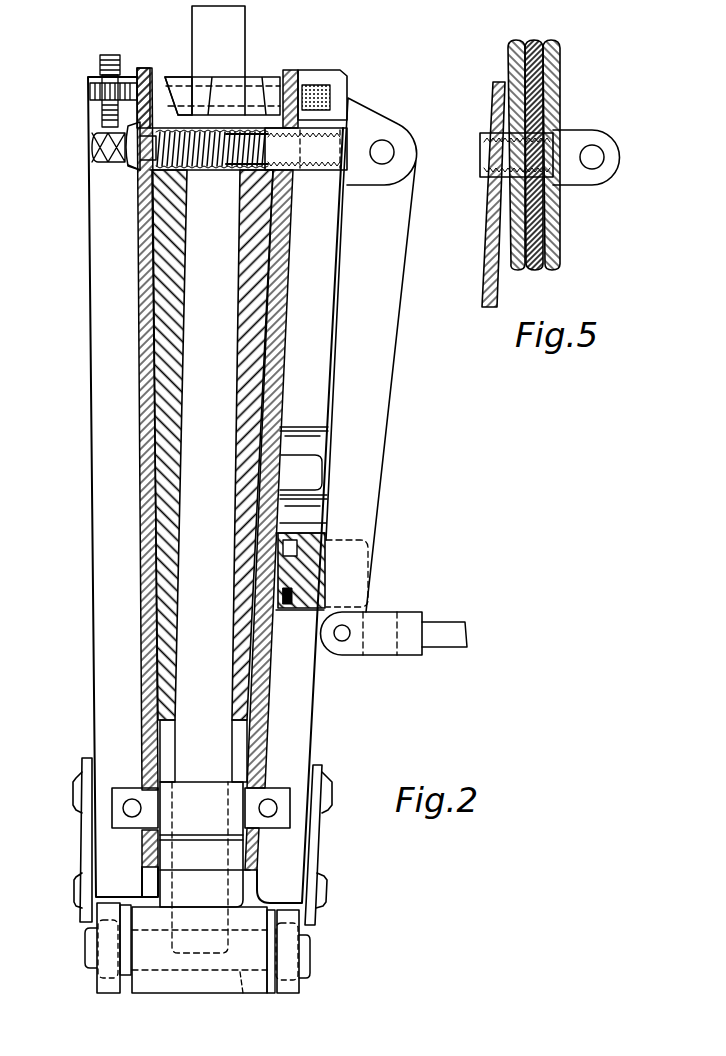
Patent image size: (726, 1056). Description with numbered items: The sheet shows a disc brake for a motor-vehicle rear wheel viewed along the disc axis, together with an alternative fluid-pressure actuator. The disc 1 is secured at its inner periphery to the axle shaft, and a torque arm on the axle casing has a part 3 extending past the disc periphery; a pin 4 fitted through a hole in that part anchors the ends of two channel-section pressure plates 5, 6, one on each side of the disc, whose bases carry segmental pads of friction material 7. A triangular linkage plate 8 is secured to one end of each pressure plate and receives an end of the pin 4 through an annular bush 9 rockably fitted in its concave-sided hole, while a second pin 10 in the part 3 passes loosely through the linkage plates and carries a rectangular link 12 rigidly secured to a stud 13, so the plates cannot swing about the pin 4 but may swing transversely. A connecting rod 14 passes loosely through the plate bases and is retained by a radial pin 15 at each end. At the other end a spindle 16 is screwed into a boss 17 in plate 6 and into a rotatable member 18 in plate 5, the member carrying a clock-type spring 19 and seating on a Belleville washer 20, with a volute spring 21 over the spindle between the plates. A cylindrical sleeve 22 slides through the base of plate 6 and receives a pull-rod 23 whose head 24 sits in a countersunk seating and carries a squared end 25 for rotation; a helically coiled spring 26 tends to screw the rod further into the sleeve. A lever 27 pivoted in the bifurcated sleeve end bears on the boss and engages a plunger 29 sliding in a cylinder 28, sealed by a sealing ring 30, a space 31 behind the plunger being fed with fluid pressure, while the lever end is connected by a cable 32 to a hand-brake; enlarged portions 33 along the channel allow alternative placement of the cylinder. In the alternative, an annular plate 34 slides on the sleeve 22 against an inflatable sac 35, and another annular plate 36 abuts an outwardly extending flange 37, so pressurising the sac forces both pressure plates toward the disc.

In FIG. 2, the disc 1 is at (246, 24).
In FIG. 2, the part of the torque arm 3 is at (177, 994).
In FIG. 2, the pin 4 is at (243, 994).
In FIG. 2, the pressure plate 5 is at (141, 372).
In FIG. 2, the pressure plate 6 is at (282, 377).
In FIG. 5, the pressure plate 6 is at (485, 266).
In FIG. 2, the pads of friction material 7 is at (243, 325).
In FIG. 2, the linkage plate 8 is at (97, 950).
In FIG. 2, the annular bush 9 is at (98, 975).
In FIG. 2, the pin 10 is at (324, 886).
In FIG. 2, the link 12 is at (84, 845).
In FIG. 2, the stud 13 is at (74, 778).
In FIG. 2, the connecting rod 14 is at (198, 793).
In FIG. 2, the pin 15 is at (130, 800).
In FIG. 2, the spindle 16 is at (176, 78).
In FIG. 2, the boss 17 is at (322, 78).
In FIG. 2, the rotatable member 18 is at (100, 62).
In FIG. 2, the clock-type spring 19 is at (108, 56).
In FIG. 2, the Belleville washer 20 is at (141, 68).
In FIG. 2, the volute spring 21 is at (250, 80).
In FIG. 2, the cylindrical sleeve 22 is at (306, 174).
In FIG. 5, the cylindrical sleeve 22 is at (481, 137).
In FIG. 2, the pull-rod 23 is at (132, 172).
In FIG. 2, the head 24 is at (126, 166).
In FIG. 2, the squared end 25 is at (92, 150).
In FIG. 2, the helically coiled spring 26 is at (213, 172).
In FIG. 2, the lever 27 is at (393, 338).
In FIG. 2, the cylinder 28 is at (303, 614).
In FIG. 2, the plunger 29 is at (318, 585).
In FIG. 2, the sealing ring 30 is at (304, 541).
In FIG. 2, the space 31 is at (296, 612).
In FIG. 2, the cable or similar linkage 32 is at (375, 656).
In FIG. 2, the enlarged portions 33 is at (327, 460).
In FIG. 5, the annular plate 34 is at (510, 76).
In FIG. 5, the annular inflatable and distensible sac 35 is at (529, 168).
In FIG. 5, the annular plate 36 is at (560, 66).
In FIG. 5, the outwardly extending flange 37 is at (573, 128).